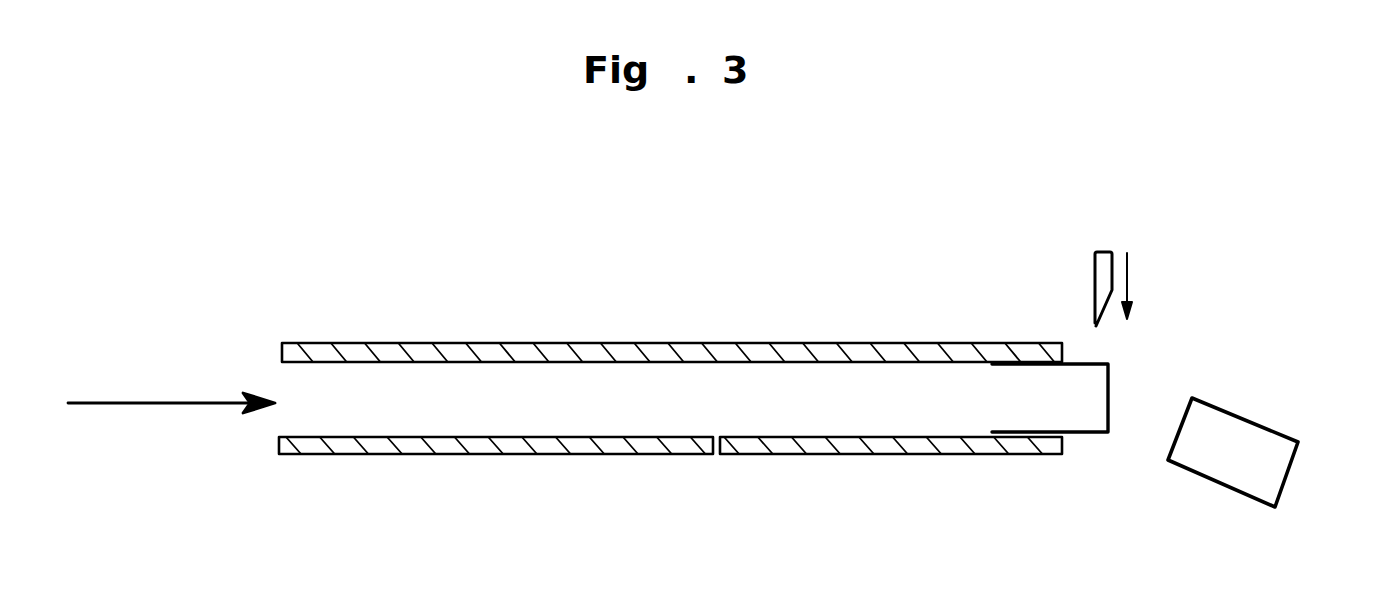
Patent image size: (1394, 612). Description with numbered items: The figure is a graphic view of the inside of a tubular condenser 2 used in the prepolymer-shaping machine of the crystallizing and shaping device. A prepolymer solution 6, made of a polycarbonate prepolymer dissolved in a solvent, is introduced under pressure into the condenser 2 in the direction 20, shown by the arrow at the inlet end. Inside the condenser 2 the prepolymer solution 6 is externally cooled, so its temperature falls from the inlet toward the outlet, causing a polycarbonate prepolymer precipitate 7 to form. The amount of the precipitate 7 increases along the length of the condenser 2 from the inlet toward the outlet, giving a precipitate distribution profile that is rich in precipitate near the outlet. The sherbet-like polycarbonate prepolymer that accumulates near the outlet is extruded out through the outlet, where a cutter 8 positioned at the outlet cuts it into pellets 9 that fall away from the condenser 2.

The tubular condenser 2 is at (670, 447).
The prepolymer solution 6 is at (326, 402).
The polycarbonate prepolymer precipitate 7 is at (1028, 397).
The cutter 8 is at (1108, 252).
The pellets 9 is at (1283, 432).
The direction 20 is at (172, 404).